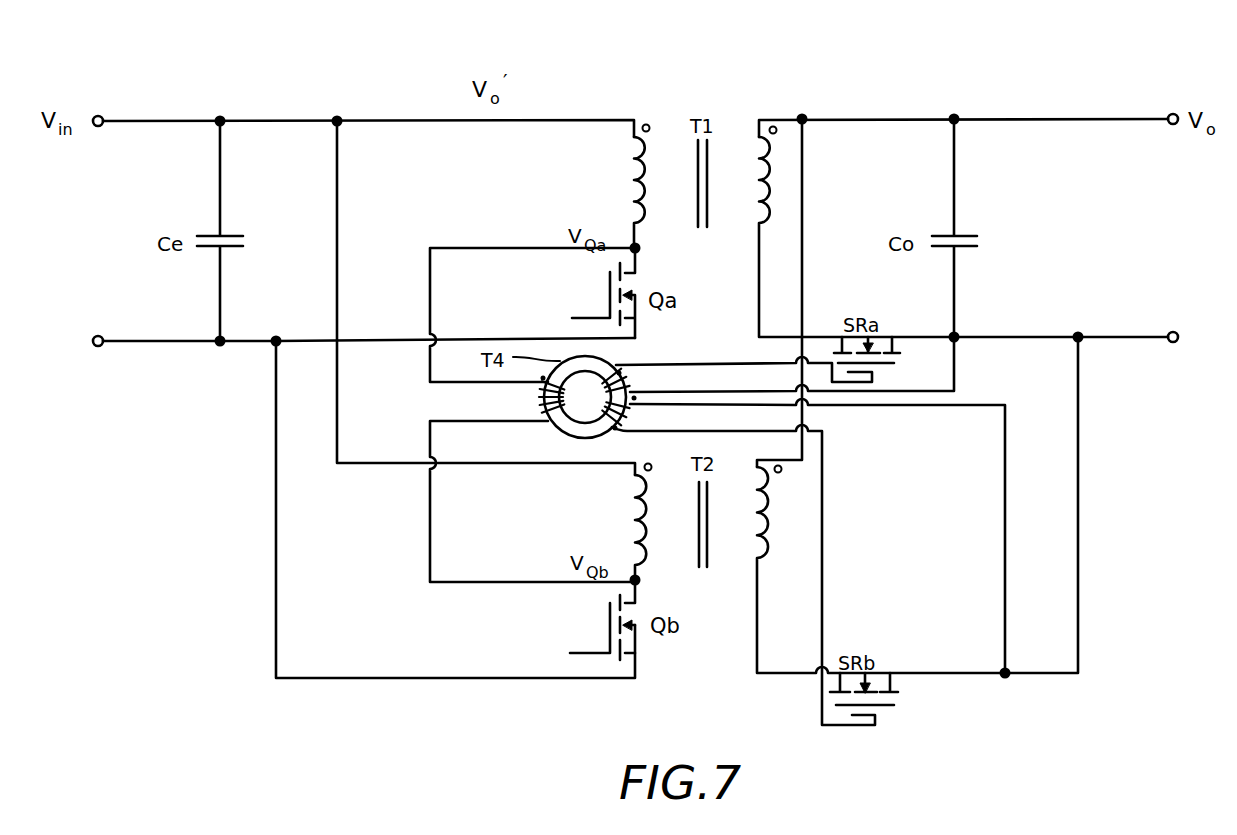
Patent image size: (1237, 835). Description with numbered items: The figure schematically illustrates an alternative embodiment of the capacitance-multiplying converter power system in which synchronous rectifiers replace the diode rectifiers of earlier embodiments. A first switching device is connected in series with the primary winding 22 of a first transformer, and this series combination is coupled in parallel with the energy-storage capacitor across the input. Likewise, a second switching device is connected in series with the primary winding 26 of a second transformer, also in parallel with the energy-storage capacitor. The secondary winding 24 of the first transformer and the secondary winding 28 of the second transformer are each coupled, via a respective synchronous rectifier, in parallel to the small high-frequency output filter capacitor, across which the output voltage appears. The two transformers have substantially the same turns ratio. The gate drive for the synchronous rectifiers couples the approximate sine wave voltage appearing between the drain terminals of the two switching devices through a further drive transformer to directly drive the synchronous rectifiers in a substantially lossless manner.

The primary winding 22 is at (648, 160).
The secondary winding 24 is at (762, 170).
The primary winding 26 is at (640, 540).
The secondary winding 28 is at (768, 556).